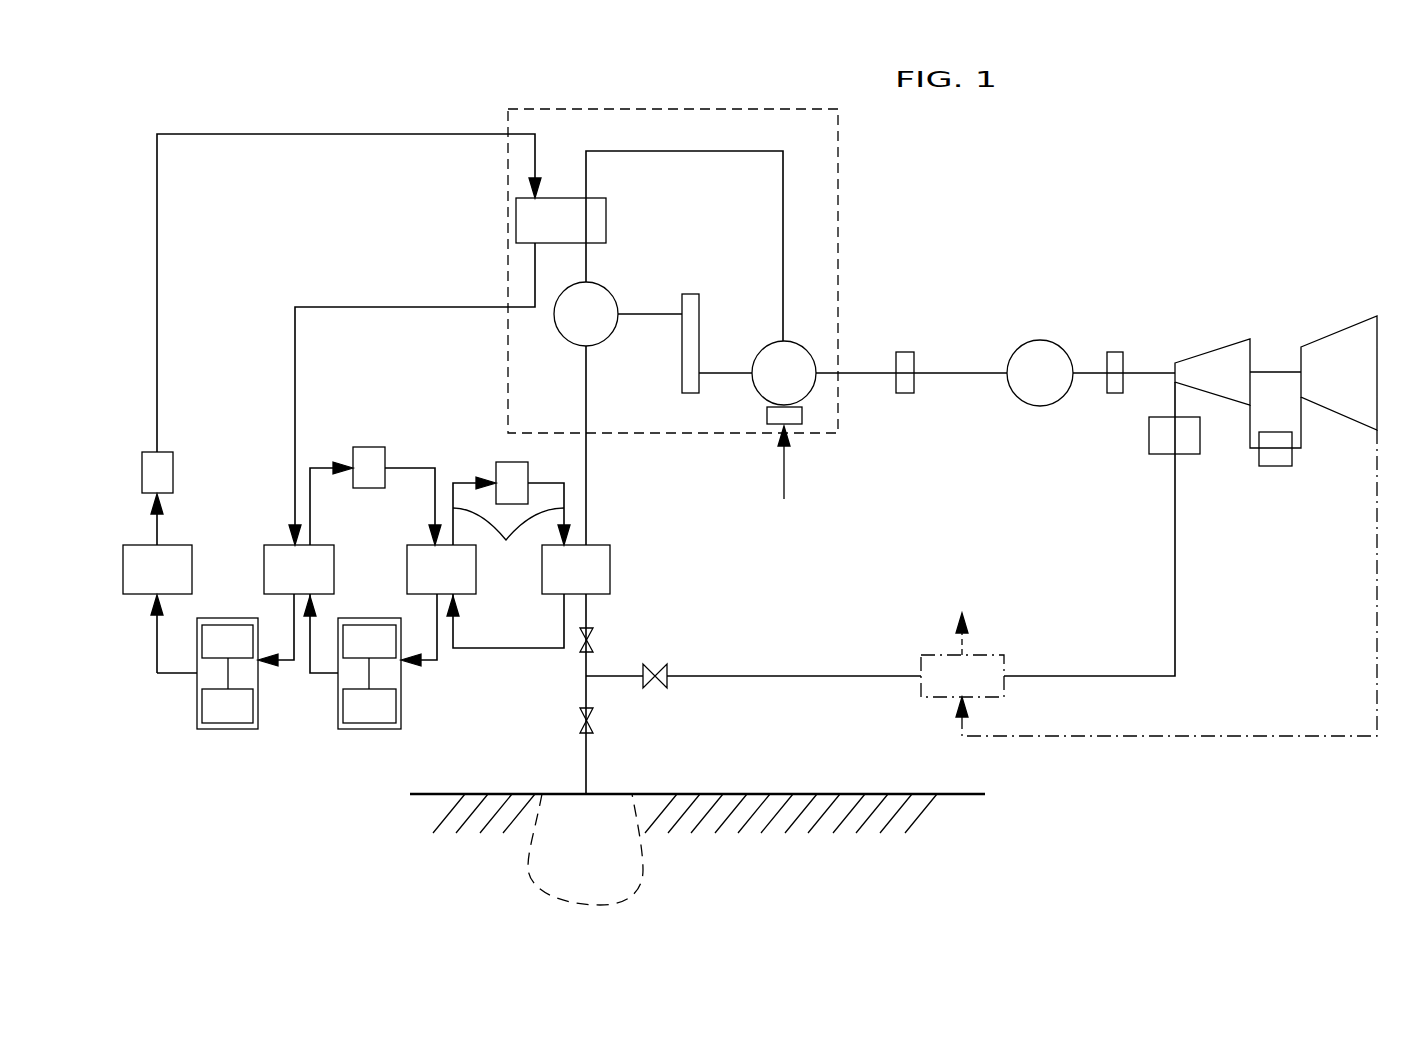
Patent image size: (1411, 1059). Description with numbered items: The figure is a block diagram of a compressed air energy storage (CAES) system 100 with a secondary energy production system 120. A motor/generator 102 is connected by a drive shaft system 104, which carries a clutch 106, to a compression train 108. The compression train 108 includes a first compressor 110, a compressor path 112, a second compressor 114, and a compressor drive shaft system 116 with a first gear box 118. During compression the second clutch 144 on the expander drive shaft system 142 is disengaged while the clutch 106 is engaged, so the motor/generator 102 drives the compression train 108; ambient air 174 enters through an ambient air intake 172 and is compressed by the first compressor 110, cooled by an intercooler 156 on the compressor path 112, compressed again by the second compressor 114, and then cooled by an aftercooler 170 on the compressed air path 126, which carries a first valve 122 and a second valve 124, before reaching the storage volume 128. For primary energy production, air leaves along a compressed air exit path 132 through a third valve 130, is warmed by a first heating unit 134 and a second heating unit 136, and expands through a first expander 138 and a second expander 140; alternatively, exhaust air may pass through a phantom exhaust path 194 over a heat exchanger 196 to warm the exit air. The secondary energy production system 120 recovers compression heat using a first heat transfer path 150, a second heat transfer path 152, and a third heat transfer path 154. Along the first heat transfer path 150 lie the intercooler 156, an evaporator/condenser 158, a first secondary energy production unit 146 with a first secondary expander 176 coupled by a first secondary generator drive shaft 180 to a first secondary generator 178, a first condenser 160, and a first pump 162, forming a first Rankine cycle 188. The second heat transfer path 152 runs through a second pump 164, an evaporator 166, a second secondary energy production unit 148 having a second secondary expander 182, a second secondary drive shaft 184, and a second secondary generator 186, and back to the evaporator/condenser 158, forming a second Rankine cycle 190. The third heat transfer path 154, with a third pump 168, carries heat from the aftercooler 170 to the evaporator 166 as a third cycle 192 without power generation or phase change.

The CAES system 100 is at (1086, 172).
The motor/generator 102 is at (1040, 373).
The drive shaft system 104 is at (952, 373).
The clutch 106 is at (905, 352).
The compression train 108 is at (839, 203).
The first compressor 110 is at (784, 373).
The compressor path 112 is at (783, 215).
The second compressor 114 is at (586, 314).
The compressor drive shaft system 116 is at (727, 325).
The first gear box 118 is at (682, 342).
The secondary energy production system 120 is at (348, 82).
The first valve 122 is at (582, 655).
The second valve 124 is at (578, 728).
The compressed air path 126 is at (587, 470).
The storage volume 128 is at (585, 849).
The third valve 130 is at (658, 684).
The compressed air exit path 132 is at (795, 676).
The first heating unit 134 is at (1149, 440).
The second heating unit 136 is at (1277, 467).
The first expander 138 is at (1212, 372).
The second expander 140 is at (1339, 373).
The expander drive shaft system 142 is at (1140, 373).
The second clutch 144 is at (1115, 393).
The first secondary energy production unit 146 is at (248, 730).
The second secondary energy production unit 148 is at (367, 732).
The first heat transfer path 150 is at (272, 136).
The second heat transfer path 152 is at (435, 492).
The third heat transfer path 154 is at (500, 683).
The intercooler 156 is at (561, 220).
The evaporator/condenser 158 is at (299, 569).
The first condenser 160 is at (157, 569).
The first pump 162 is at (173, 463).
The second pump 164 is at (373, 447).
The evaporator 166 is at (441, 569).
The third pump 168 is at (497, 462).
The aftercooler 170 is at (576, 569).
The ambient air intake 172 is at (765, 412).
The ambient air 174 is at (806, 484).
The first secondary expander 176 is at (227, 641).
The first secondary generator 178 is at (227, 706).
The first secondary generator drive shaft 180 is at (227, 680).
The second secondary expander 182 is at (369, 641).
The second secondary drive shaft 184 is at (373, 680).
The second secondary generator 186 is at (369, 706).
The first Rankine cycle 188 is at (309, 325).
The second Rankine cycle 190 is at (355, 423).
The third cycle 192 is at (551, 453).
The exhaust path 194 is at (1377, 570).
The heat exchanger 196 is at (962, 655).